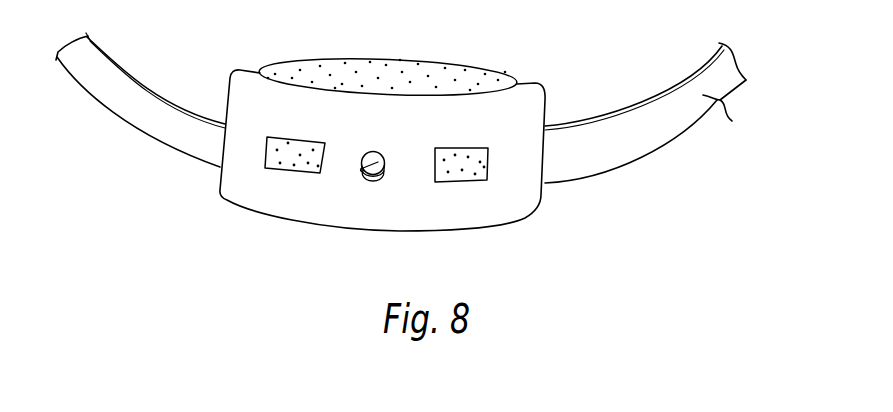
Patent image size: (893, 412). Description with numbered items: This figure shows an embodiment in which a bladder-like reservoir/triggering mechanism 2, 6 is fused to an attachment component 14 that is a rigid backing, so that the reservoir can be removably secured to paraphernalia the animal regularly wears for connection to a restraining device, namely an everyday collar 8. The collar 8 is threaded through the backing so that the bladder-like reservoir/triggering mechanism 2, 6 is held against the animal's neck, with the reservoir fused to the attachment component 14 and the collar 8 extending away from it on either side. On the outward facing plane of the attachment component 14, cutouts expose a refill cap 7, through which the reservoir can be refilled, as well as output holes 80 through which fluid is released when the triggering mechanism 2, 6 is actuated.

The bladder-like reservoir/triggering mechanism 2 is at (387, 55).
The bladder-like reservoir/triggering mechanism 6 is at (395, 67).
The refill cap 7 is at (361, 173).
The collar 8 is at (408, 108).
The attachment component 14 is at (533, 102).
The output holes 80 is at (288, 167).